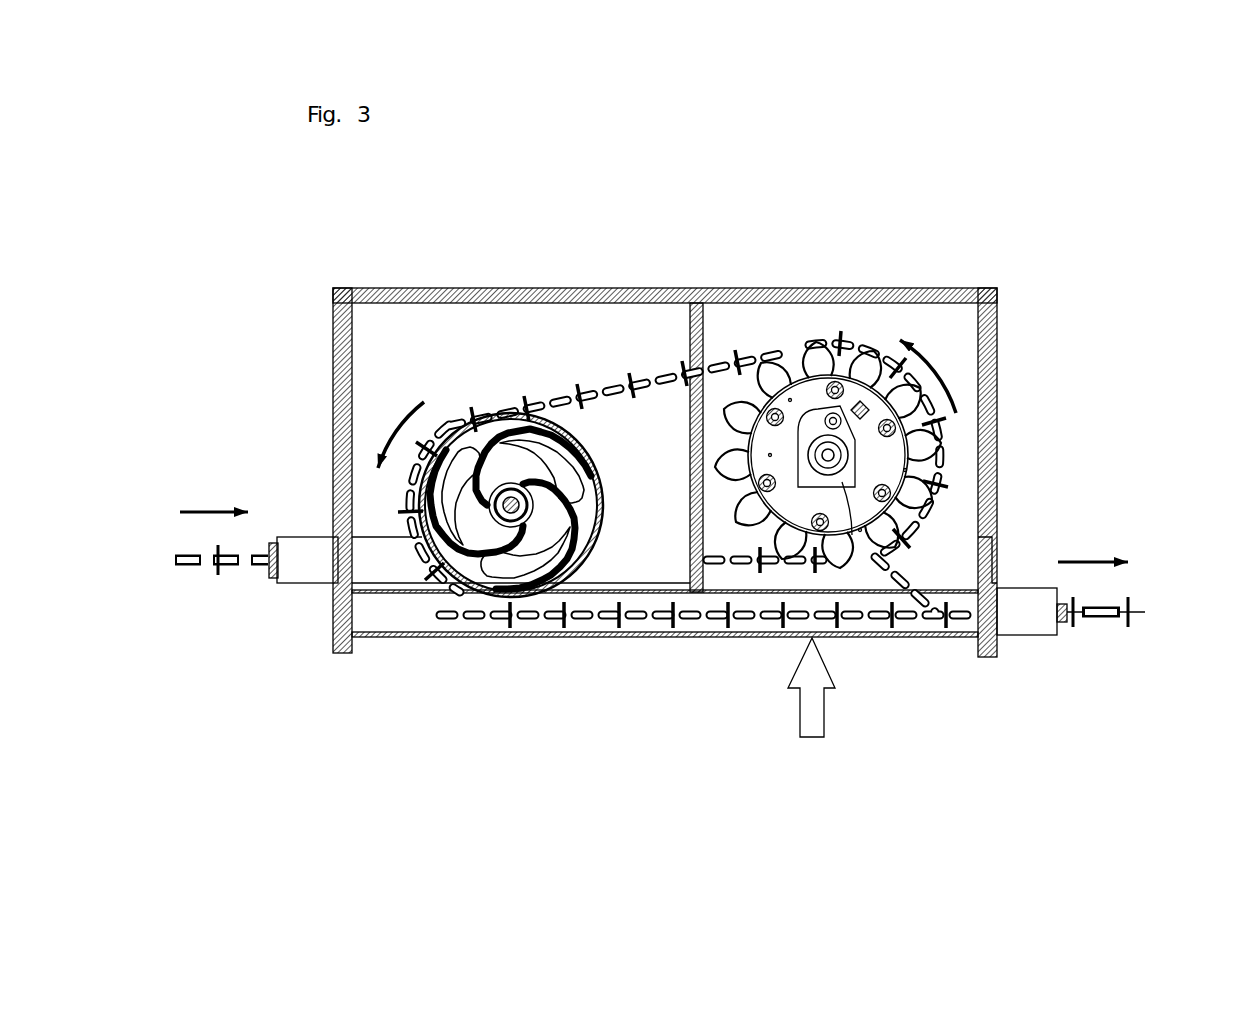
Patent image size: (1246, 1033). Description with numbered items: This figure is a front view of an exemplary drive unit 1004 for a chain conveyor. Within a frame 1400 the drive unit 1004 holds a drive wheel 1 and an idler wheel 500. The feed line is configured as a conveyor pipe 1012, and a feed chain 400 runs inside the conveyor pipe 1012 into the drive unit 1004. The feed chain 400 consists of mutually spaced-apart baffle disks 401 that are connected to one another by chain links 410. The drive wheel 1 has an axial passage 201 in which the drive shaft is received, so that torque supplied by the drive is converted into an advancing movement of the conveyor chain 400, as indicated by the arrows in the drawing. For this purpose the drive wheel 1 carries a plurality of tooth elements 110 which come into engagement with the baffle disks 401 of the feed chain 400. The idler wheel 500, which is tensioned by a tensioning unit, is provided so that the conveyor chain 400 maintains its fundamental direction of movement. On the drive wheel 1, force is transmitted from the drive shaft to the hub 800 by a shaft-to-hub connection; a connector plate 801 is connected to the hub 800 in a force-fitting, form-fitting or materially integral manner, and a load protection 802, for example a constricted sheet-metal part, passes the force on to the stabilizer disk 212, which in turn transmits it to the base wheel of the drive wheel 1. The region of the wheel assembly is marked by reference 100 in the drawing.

The drive unit 1004 is at (252, 265).
The frame 1400 is at (386, 290).
The conveyor pipe 1012 is at (296, 537).
The feed chain 400 is at (197, 578).
The chain links 410 is at (1098, 622).
The baffle disks 401 is at (1133, 628).
The drive wheel 1 is at (811, 706).
The idler wheel 500 is at (588, 443).
The tooth elements 110 is at (817, 335).
The rotary wheel unit 100 is at (872, 326).
The axial passage 201 is at (857, 453).
The hub 800 is at (860, 407).
The load protection 802 is at (885, 400).
The stabilizer disks 212 is at (890, 483).
The connector plate 801 is at (855, 540).